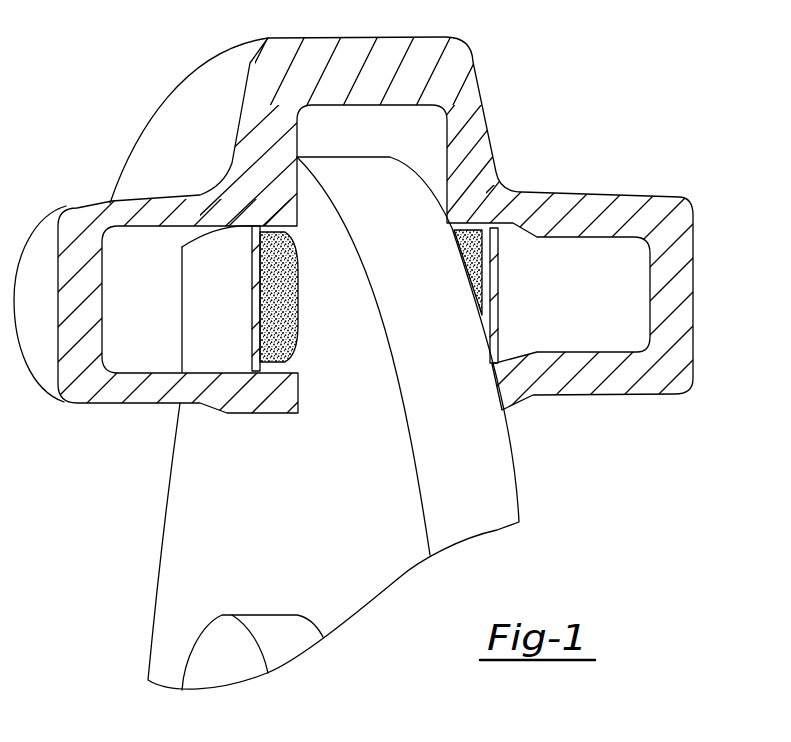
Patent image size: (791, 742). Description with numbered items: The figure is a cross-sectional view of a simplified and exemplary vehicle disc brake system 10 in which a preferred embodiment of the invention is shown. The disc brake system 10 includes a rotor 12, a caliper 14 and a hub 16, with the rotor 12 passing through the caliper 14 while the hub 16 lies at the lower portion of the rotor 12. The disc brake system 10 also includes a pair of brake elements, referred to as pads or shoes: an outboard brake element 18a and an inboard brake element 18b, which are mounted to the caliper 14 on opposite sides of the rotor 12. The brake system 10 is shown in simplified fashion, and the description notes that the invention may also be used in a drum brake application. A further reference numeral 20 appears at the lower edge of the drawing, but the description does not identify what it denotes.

The vehicle disc brake system 10 is at (584, 71).
The rotor 12 is at (500, 463).
The caliper 14 is at (494, 185).
The hub 16 is at (219, 676).
The outboard brake element 18a is at (202, 313).
The inboard brake element 18b is at (500, 337).
The base 20 is at (542, 735).